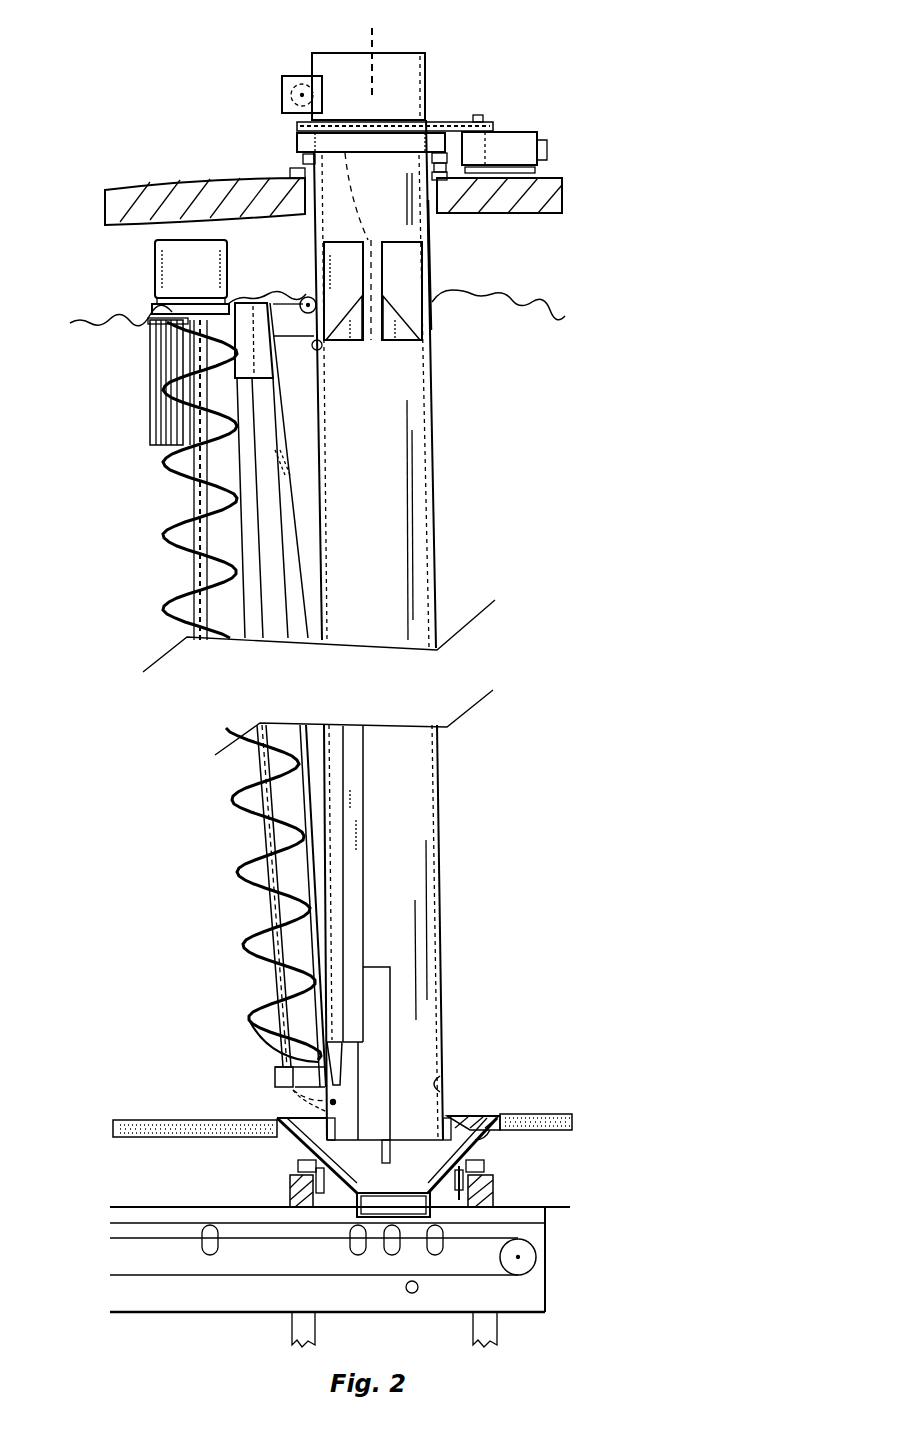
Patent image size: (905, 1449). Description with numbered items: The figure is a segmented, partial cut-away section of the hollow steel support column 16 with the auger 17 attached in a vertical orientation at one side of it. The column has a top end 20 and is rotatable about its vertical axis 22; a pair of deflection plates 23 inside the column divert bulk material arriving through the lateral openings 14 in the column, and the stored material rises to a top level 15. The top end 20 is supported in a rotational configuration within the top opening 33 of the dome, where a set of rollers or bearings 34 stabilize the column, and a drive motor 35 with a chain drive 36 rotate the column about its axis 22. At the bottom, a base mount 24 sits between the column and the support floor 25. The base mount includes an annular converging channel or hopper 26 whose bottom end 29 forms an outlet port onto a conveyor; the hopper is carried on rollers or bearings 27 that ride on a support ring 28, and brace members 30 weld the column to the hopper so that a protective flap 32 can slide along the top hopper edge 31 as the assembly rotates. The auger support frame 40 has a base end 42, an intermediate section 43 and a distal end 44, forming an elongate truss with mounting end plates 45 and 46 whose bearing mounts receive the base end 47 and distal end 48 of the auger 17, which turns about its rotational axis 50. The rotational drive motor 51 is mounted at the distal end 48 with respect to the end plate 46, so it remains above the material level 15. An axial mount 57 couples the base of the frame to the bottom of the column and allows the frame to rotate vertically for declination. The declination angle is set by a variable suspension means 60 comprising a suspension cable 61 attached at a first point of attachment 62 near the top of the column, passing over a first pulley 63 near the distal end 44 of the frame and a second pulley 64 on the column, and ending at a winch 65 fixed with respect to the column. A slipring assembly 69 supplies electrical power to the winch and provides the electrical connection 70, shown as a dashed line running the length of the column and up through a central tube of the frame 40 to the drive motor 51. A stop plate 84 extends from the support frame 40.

The lateral openings 14 is at (345, 262).
The top level 15 is at (103, 322).
The support column 16 is at (420, 75).
The auger 17 is at (163, 540).
The top end 20 is at (434, 237).
The vertical axis 22 is at (373, 49).
The deflection plates 23 is at (350, 310).
The base mount 24 is at (495, 1163).
The support floor 25 is at (573, 1125).
The channeling hopper 26 is at (300, 1140).
The rollers or bearings 27 is at (485, 1162).
The support ring 28 is at (493, 1190).
The bottom end of hopper 29 is at (435, 1210).
The brace members 30 is at (392, 1140).
The top hopper edge 31 is at (500, 1116).
The protective flap 32 is at (293, 1102).
The top opening 33 is at (378, 200).
The rollers or bearings 34 is at (290, 170).
The drive motor 35 is at (505, 133).
The chain drive 36 is at (460, 121).
The auger support frame 40 is at (312, 567).
The base end 42 is at (353, 1032).
The intermediate section 43 is at (353, 743).
The distal end 44 is at (304, 375).
The mounting end plate 45 is at (275, 1078).
The mounting end plate 46 is at (148, 327).
The base end of auger 47 is at (255, 1050).
The distal end of auger 48 is at (150, 378).
The rotational axis 50 is at (185, 205).
The rotational drive motor 51 is at (165, 262).
The axial mount 57 is at (342, 1055).
The variable suspension means 60 is at (280, 80).
The suspension cable 61 is at (292, 362).
The first point of attachment 62 is at (322, 347).
The first pulley 63 is at (250, 303).
The second pulley 64 is at (305, 298).
The winch 65 is at (298, 76).
The slipring assembly 69 is at (297, 143).
The electrical connection 70 is at (358, 165).
The stop plate 84 is at (430, 1083).